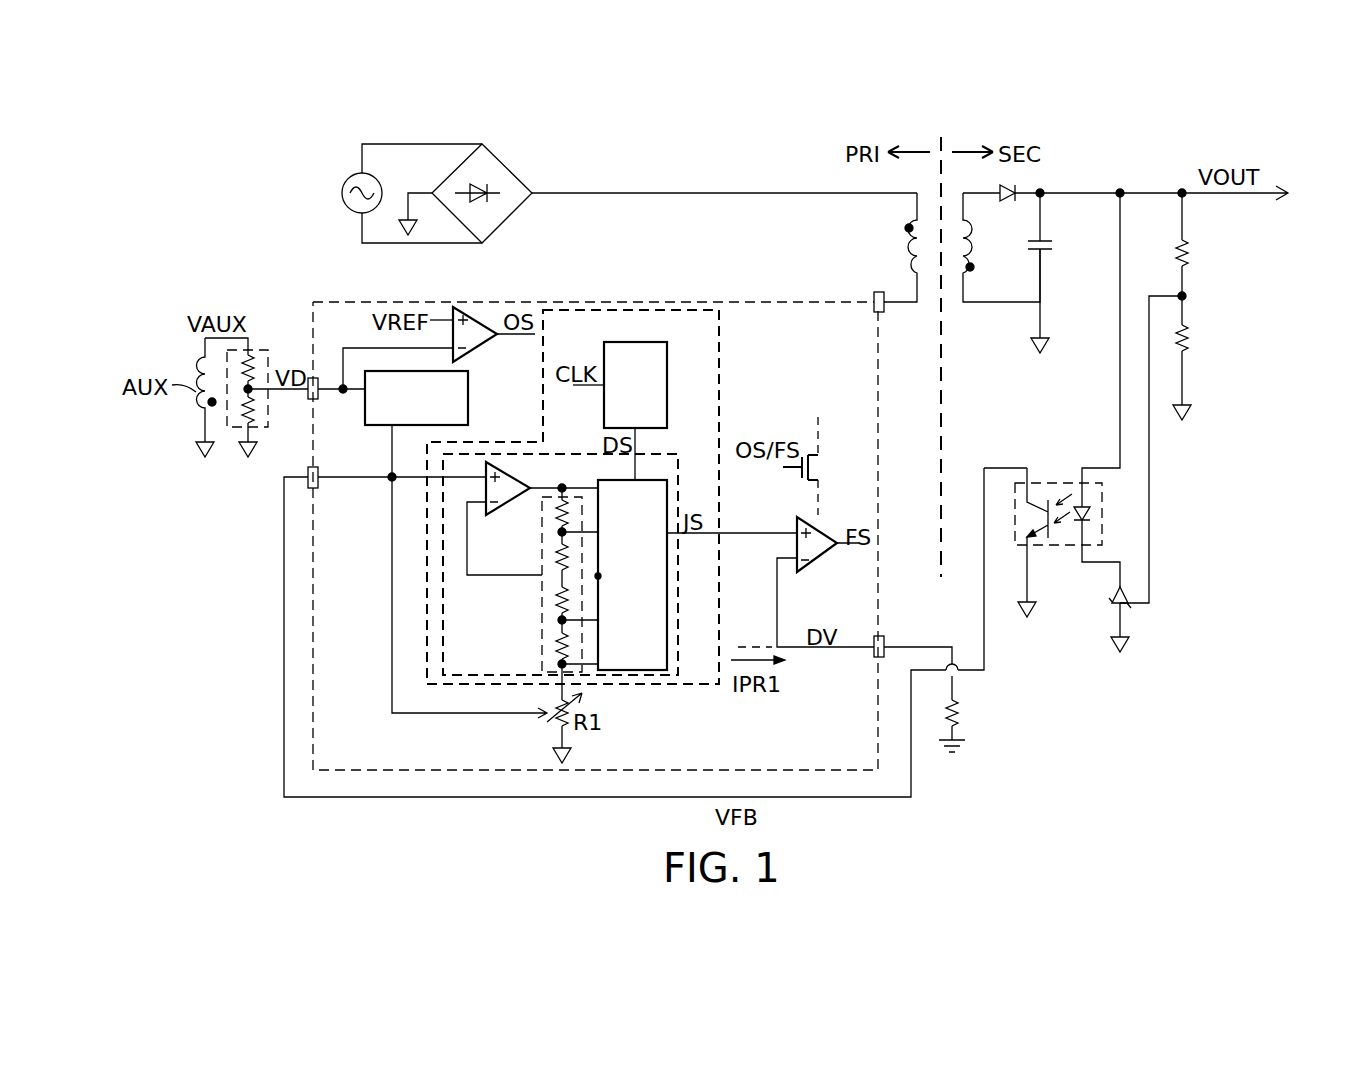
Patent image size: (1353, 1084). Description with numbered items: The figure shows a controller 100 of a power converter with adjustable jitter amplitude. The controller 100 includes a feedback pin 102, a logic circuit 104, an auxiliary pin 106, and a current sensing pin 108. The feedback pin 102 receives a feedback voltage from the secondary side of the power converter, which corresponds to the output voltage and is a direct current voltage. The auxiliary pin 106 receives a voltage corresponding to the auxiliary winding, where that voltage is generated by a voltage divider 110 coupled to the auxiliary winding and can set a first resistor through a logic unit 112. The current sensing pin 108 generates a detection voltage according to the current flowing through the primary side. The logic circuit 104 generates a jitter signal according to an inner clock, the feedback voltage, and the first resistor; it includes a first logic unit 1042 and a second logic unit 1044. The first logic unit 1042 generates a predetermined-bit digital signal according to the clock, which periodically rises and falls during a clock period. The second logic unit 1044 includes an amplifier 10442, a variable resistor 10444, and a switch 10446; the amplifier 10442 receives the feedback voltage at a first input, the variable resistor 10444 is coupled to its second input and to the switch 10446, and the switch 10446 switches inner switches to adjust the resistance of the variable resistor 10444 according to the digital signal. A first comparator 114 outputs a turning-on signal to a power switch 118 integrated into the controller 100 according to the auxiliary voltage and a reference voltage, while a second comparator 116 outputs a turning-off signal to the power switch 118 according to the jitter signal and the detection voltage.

The controller 100 is at (650, 301).
The feedback pin 102 is at (318, 488).
The logic circuit 104 is at (720, 381).
The auxiliary pin 106 is at (318, 398).
The current sensing pin 108 is at (873, 657).
The voltage divider 110 is at (264, 350).
The logic unit 112 is at (470, 405).
The first comparator 114 is at (484, 345).
The second comparator 116 is at (818, 560).
The power switch 118 is at (820, 465).
The first logic unit 1042 is at (640, 342).
The second logic unit 1044 is at (655, 453).
The amplifier 10442 is at (508, 505).
The variable resistor 10444 is at (542, 604).
The switch 10446 is at (625, 480).